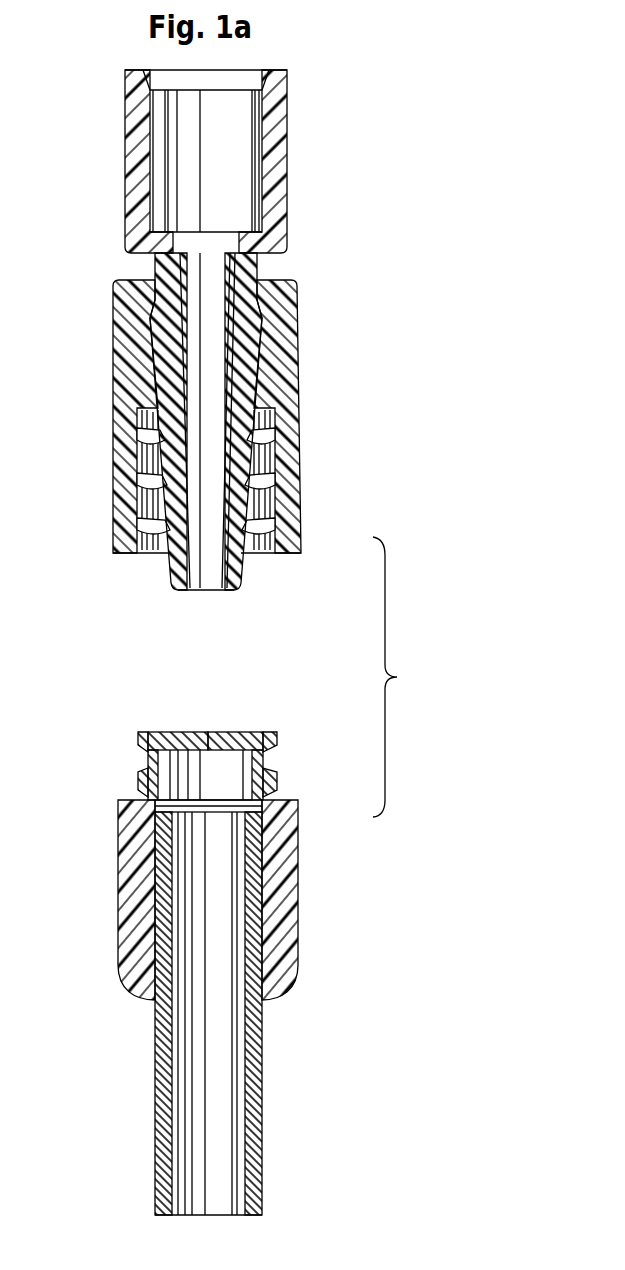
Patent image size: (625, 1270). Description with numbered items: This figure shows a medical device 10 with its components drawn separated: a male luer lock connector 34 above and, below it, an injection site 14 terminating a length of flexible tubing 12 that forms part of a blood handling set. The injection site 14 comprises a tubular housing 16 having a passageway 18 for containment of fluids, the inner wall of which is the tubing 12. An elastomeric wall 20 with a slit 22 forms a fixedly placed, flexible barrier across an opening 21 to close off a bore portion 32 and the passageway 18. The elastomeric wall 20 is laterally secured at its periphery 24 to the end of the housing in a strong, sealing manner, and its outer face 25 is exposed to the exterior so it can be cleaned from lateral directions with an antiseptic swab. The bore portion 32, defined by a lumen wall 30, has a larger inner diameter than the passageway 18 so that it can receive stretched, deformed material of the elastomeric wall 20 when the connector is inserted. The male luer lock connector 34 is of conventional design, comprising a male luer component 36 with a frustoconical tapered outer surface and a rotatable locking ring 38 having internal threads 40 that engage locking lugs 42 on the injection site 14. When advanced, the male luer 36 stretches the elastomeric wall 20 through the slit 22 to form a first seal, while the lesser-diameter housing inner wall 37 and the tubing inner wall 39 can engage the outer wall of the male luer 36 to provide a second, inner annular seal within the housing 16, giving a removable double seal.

The medical device 10 is at (209, 1007).
The flexible tubing 12 is at (155, 1046).
The injection site 14 is at (125, 926).
The tubular housing 16 is at (290, 888).
The passageway 18 is at (225, 1030).
The elastomeric wall 20 is at (221, 741).
The opening 21 is at (165, 750).
The slit 22 is at (208, 746).
The periphery 24 is at (172, 732).
The outer face 25 is at (230, 732).
The lumen wall 30 is at (157, 788).
The bore portion 32 is at (272, 766).
The male luer lock connector 34 is at (104, 127).
The male luer component 36 is at (245, 578).
The housing inner wall 37 is at (247, 793).
The locking ring 38 is at (291, 284).
The tubing inner wall 39 is at (183, 857).
The internal threads 40 is at (286, 456).
The locking lugs 42 is at (278, 746).